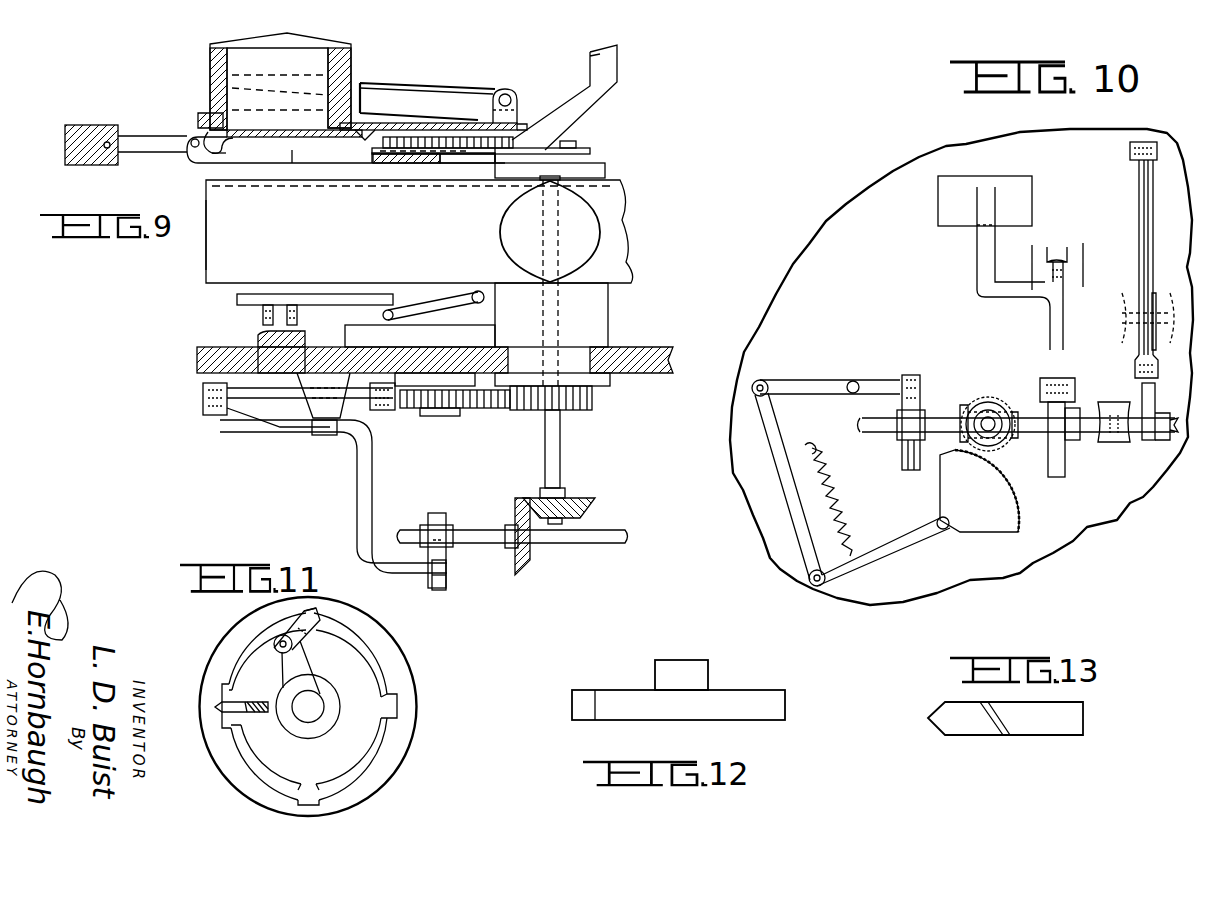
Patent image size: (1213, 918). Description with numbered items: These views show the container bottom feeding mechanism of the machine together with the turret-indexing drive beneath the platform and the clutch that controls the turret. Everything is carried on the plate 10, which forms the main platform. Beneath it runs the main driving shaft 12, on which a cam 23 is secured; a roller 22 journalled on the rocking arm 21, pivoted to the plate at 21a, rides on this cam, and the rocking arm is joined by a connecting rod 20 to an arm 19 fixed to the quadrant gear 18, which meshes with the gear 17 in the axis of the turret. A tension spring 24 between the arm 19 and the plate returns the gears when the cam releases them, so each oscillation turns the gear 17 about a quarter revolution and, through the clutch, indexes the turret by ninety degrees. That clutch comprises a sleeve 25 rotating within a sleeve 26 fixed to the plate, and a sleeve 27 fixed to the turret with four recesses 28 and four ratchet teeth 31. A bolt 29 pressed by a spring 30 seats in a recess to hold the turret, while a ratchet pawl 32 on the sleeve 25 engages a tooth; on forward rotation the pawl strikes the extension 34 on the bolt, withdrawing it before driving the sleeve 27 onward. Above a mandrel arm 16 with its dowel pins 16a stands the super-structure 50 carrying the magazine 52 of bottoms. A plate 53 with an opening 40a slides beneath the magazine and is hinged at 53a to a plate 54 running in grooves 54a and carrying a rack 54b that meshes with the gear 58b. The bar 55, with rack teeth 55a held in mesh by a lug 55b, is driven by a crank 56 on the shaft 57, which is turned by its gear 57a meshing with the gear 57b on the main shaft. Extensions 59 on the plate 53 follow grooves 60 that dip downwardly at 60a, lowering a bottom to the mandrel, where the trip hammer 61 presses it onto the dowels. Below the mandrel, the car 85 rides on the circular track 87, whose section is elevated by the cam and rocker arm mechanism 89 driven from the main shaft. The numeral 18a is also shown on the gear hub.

In FIG. 9, the plate 10 is at (380, 350).
In FIG. 10, the plate 10 is at (1051, 518).
In FIG. 9, the main driving shaft 12 is at (473, 530).
In FIG. 9, the arm 16 is at (572, 212).
In FIG. 9, the dowel pins 16a is at (206, 262).
In FIG. 9, the gear 17 is at (565, 410).
In FIG. 10, the gear 17 is at (1003, 450).
In FIG. 9, the quadrant gear 18 is at (490, 412).
In FIG. 10, the quadrant gear 18 is at (978, 518).
In FIG. 9, the gear hub 18a is at (455, 420).
In FIG. 9, the arm 19 is at (388, 412).
In FIG. 10, the arm 19 is at (895, 548).
In FIG. 9, the connecting rod 20 is at (288, 400).
In FIG. 10, the connecting rod 20 is at (772, 432).
In FIG. 9, the rocking arm 21 is at (250, 414).
In FIG. 10, the rocking arm 21 is at (802, 380).
In FIG. 9, the pivot 21a is at (320, 440).
In FIG. 9, the roller 22 is at (447, 580).
In FIG. 10, the roller 22 is at (910, 376).
In FIG. 9, the cam 23 is at (436, 515).
In FIG. 10, the cam 23 is at (905, 455).
In FIG. 10, the tension spring 24 is at (838, 500).
In FIG. 11, the sleeve 25 is at (330, 705).
In FIG. 11, the sleeve 26 is at (319, 690).
In FIG. 11, the sleeve 27 is at (392, 645).
In FIG. 11, the recesses 28 is at (398, 693).
In FIG. 11, the bolt 29 is at (242, 713).
In FIG. 12, the bolt 29 is at (622, 700).
In FIG. 13, the bolt 29 is at (955, 718).
In FIG. 11, the spring 30 is at (268, 682).
In FIG. 11, the ratchet teeth 31 is at (320, 612).
In FIG. 11, the ratchet pawl 32 is at (300, 638).
In FIG. 12, the extension 34 is at (698, 645).
In FIG. 13, the extension 34 is at (1005, 735).
In FIG. 9, the opening 40a is at (335, 137).
In FIG. 9, the super-structure 50 is at (566, 100).
In FIG. 9, the magazine 52 is at (352, 76).
In FIG. 9, the plate 53 is at (195, 128).
In FIG. 9, the hinge 53a is at (445, 118).
In FIG. 9, the plate 54 is at (470, 125).
In FIG. 9, the grooves 54a is at (527, 130).
In FIG. 9, the rack 54b is at (474, 164).
In FIG. 9, the bar 55 is at (545, 149).
In FIG. 9, the rack teeth 55a is at (462, 164).
In FIG. 9, the lug 55b is at (410, 164).
In FIG. 9, the crank 56 is at (578, 149).
In FIG. 9, the rotating shaft 57 is at (562, 462).
In FIG. 9, the gear 57a is at (582, 500).
In FIG. 9, the gear 57b is at (532, 560).
In FIG. 9, the gear 58b is at (382, 164).
In FIG. 9, the extensions 59 is at (395, 137).
In FIG. 9, the grooves 60 is at (352, 163).
In FIG. 9, the downward curve of groove 60a is at (188, 160).
In FIG. 9, the trip hammer 61 is at (72, 160).
In FIG. 9, the car 85 is at (310, 306).
In FIG. 9, the circular track 87 is at (258, 340).
In FIG. 10, the cam and rocker arm mechanism 89 is at (1050, 312).